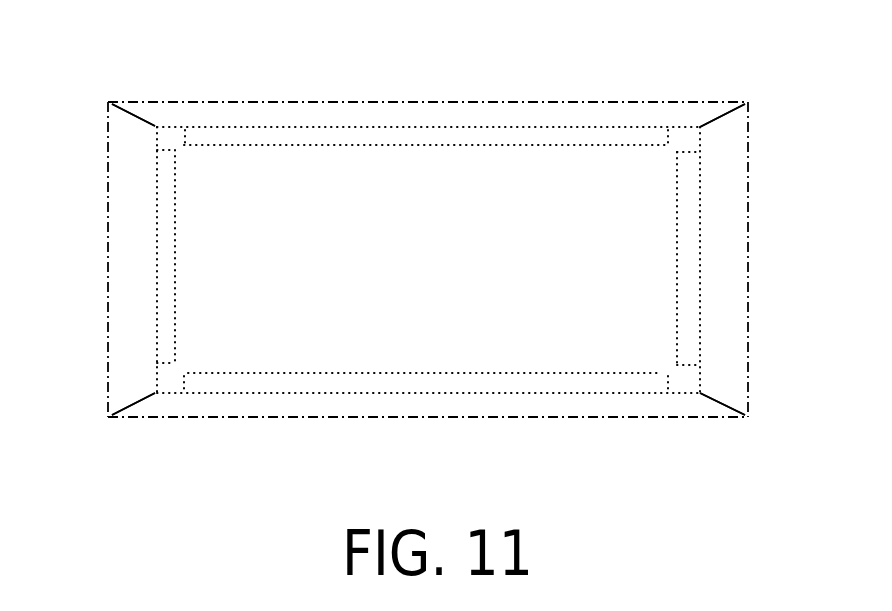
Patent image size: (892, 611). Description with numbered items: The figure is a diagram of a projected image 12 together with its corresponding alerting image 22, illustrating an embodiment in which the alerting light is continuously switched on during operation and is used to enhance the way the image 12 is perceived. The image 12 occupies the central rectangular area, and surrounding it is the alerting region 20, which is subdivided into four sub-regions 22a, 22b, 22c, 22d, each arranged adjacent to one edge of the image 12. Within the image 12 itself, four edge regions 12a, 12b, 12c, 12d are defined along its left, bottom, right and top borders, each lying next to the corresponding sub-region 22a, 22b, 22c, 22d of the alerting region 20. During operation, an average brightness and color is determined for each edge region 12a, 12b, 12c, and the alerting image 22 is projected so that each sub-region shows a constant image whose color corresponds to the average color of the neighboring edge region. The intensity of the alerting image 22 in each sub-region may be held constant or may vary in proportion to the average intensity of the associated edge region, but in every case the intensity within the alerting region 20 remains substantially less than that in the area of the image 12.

The image 12 is at (453, 270).
The edge region 12a is at (165, 321).
The edge region 12b is at (592, 386).
The edge region 12c is at (688, 229).
The edge region 12d is at (265, 137).
The alerting region 20 is at (398, 101).
The alerting image 22 is at (148, 186).
The sub-region 22a is at (134, 259).
The sub-region 22b is at (288, 406).
The sub-region 22c is at (719, 298).
The sub-region 22d is at (570, 118).